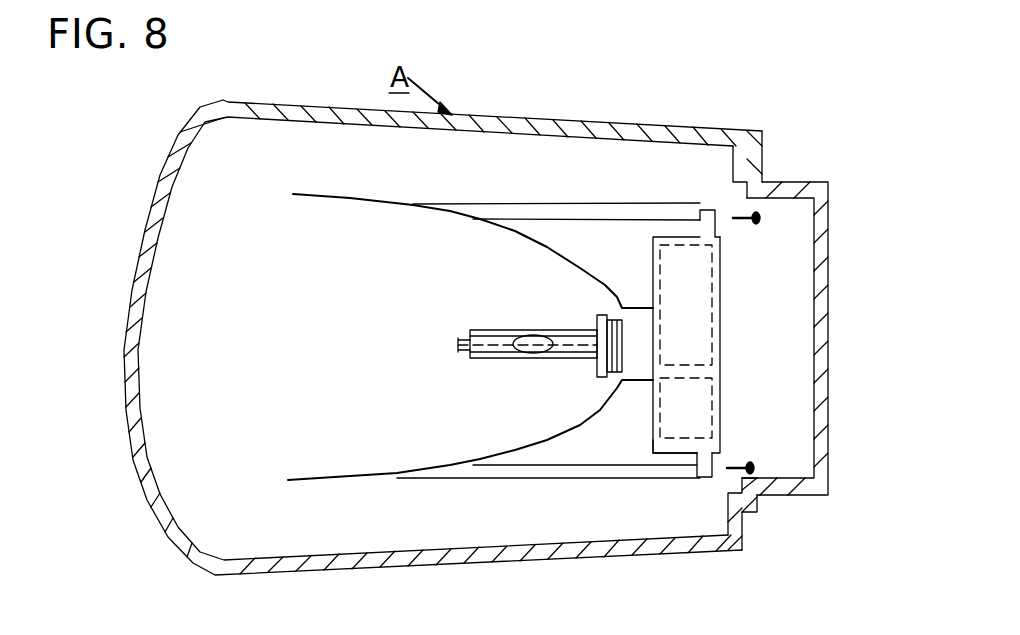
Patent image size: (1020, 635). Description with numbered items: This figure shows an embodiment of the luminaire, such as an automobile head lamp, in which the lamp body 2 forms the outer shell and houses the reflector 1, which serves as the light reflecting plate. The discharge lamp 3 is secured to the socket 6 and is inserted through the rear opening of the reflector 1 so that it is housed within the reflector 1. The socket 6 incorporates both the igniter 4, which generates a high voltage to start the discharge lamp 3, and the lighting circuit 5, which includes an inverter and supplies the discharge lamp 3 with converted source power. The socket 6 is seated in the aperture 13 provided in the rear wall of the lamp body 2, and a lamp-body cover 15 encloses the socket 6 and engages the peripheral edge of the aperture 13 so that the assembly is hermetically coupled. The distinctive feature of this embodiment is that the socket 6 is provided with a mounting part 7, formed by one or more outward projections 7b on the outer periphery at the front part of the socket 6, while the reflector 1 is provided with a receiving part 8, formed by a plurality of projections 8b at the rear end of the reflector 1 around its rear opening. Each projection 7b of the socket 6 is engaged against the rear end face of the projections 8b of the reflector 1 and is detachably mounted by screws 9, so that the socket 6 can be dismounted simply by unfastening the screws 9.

The reflector 1 is at (428, 207).
The lamp body 2 is at (553, 120).
The discharge lamp 3 is at (522, 333).
The igniter 4 is at (683, 440).
The lighting circuit 5 is at (662, 275).
The socket 6 is at (652, 453).
The mounting part 7 is at (707, 212).
The projection 7b is at (712, 212).
The receiving part 8 is at (700, 212).
The projection 8b is at (703, 212).
The screw 9 is at (745, 212).
The aperture 13 is at (750, 195).
The lamp-body cover 15 is at (835, 325).